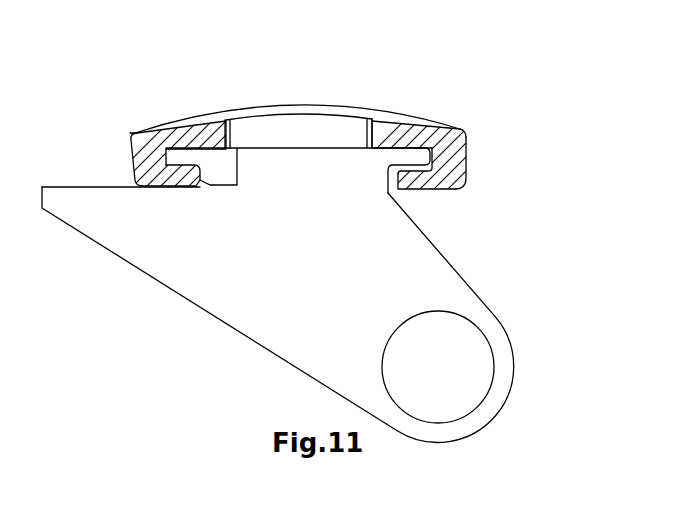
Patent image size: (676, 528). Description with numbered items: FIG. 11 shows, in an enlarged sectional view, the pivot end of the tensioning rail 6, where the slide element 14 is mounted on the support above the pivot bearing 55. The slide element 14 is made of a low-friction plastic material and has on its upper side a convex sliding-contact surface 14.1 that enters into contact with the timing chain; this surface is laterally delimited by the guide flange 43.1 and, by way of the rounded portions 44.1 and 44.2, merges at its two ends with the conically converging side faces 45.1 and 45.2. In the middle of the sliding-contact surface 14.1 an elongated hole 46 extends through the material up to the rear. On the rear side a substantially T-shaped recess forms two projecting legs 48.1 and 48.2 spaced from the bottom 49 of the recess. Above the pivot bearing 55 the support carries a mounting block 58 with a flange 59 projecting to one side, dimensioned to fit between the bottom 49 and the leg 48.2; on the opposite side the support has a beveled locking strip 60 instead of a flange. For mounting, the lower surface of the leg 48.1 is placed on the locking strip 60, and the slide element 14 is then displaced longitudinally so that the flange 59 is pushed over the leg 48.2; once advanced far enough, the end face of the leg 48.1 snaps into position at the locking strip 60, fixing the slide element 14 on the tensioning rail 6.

The tensioning rail 6 is at (307, 297).
The slide element 14 is at (466, 131).
The sliding-contact surface 14.1 is at (412, 122).
The guide flange 43.1 is at (390, 112).
The rounded portion 44.1 is at (478, 133).
The rounded portion 44.2 is at (132, 137).
The conically converging side face 45.1 is at (464, 160).
The conically converging side face 45.2 is at (131, 158).
The elongated hole 46 is at (333, 133).
The projecting leg 48.1 is at (177, 182).
The projecting leg 48.2 is at (442, 160).
The bottom of the T-shaped recess 49 is at (207, 149).
The pivot bearing 55 is at (472, 367).
The mounting block 58 is at (312, 156).
The flange 59 is at (458, 176).
The locking strip 60 is at (205, 187).